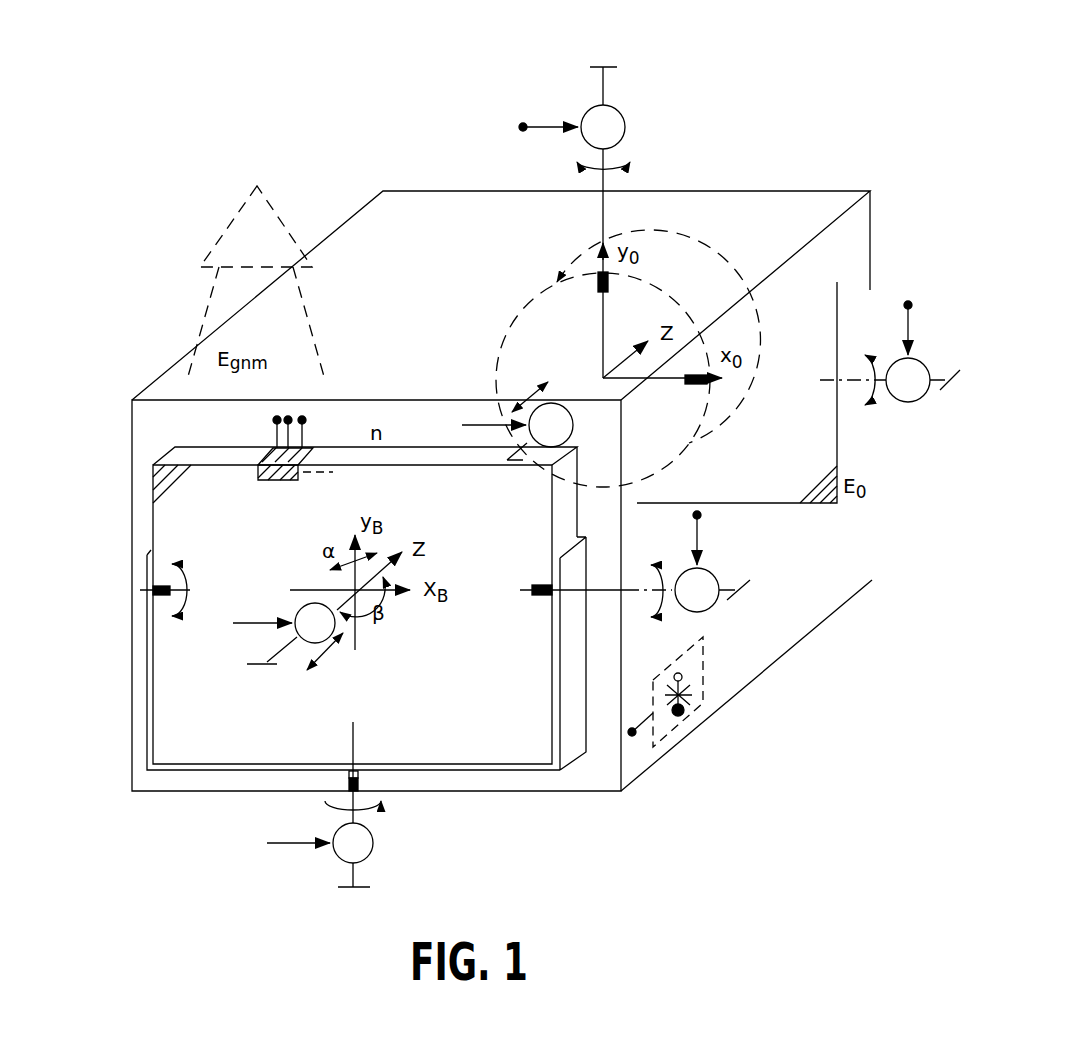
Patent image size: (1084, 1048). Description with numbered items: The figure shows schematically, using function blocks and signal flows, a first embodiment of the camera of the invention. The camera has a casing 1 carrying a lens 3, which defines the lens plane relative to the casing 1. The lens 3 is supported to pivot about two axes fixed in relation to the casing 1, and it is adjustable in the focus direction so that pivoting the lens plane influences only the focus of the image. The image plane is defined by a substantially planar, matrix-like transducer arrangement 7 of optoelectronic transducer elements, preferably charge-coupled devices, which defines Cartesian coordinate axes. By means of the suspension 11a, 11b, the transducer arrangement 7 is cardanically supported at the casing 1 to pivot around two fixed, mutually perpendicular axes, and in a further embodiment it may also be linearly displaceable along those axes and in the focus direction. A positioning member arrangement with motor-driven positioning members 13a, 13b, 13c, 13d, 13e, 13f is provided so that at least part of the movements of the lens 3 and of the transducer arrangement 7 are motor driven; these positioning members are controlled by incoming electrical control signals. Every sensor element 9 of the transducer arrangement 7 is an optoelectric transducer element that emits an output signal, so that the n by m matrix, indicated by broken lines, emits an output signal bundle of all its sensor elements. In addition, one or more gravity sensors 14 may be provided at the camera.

The casing 1 is at (167, 388).
The lens 3 is at (713, 247).
The transducer arrangement 7 is at (526, 748).
The sensor element 9 is at (292, 483).
The suspension 11a is at (150, 593).
The suspension 11b is at (358, 785).
The positioning member 13a is at (604, 118).
The positioning member 13b is at (890, 369).
The positioning member 13c is at (539, 421).
The positioning member 13d is at (648, 567).
The positioning member 13e is at (344, 852).
The positioning member 13f is at (285, 630).
The gravity sensor 14 is at (673, 723).